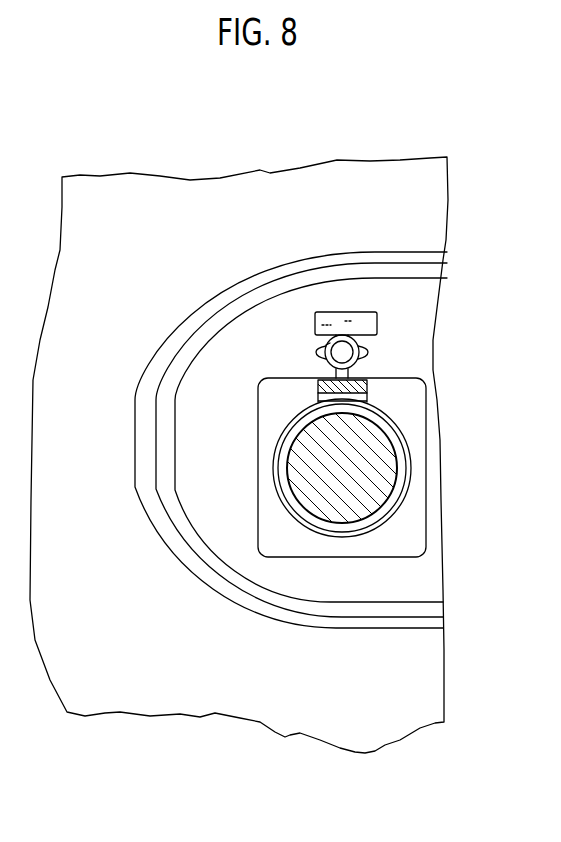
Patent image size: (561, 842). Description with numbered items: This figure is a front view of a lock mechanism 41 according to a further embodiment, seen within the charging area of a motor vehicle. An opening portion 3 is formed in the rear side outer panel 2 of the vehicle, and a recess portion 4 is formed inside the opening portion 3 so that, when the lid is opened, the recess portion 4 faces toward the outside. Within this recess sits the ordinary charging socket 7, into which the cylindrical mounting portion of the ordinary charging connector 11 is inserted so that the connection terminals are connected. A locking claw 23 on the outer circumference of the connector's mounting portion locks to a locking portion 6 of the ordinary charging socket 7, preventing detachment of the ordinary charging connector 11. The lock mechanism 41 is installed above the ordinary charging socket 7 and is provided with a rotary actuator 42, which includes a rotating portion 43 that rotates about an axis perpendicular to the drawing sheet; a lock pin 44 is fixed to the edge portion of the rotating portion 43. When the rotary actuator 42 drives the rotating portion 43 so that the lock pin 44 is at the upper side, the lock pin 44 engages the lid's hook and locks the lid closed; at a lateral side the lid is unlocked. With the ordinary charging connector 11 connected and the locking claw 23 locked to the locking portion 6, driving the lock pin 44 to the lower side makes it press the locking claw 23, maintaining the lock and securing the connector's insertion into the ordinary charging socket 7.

The outer panel 2 is at (213, 193).
The opening portion 3 is at (407, 250).
The recess portion 4 is at (397, 610).
The locking portion 6 is at (318, 394).
The ordinary charging socket 7 is at (345, 540).
The ordinary charging connector 11 is at (387, 449).
The locking claw 23 is at (365, 383).
The lock mechanism 41 is at (314, 343).
The rotary actuator 42 is at (382, 333).
The rotating portion 43 is at (364, 355).
The lock pin 44 is at (340, 337).